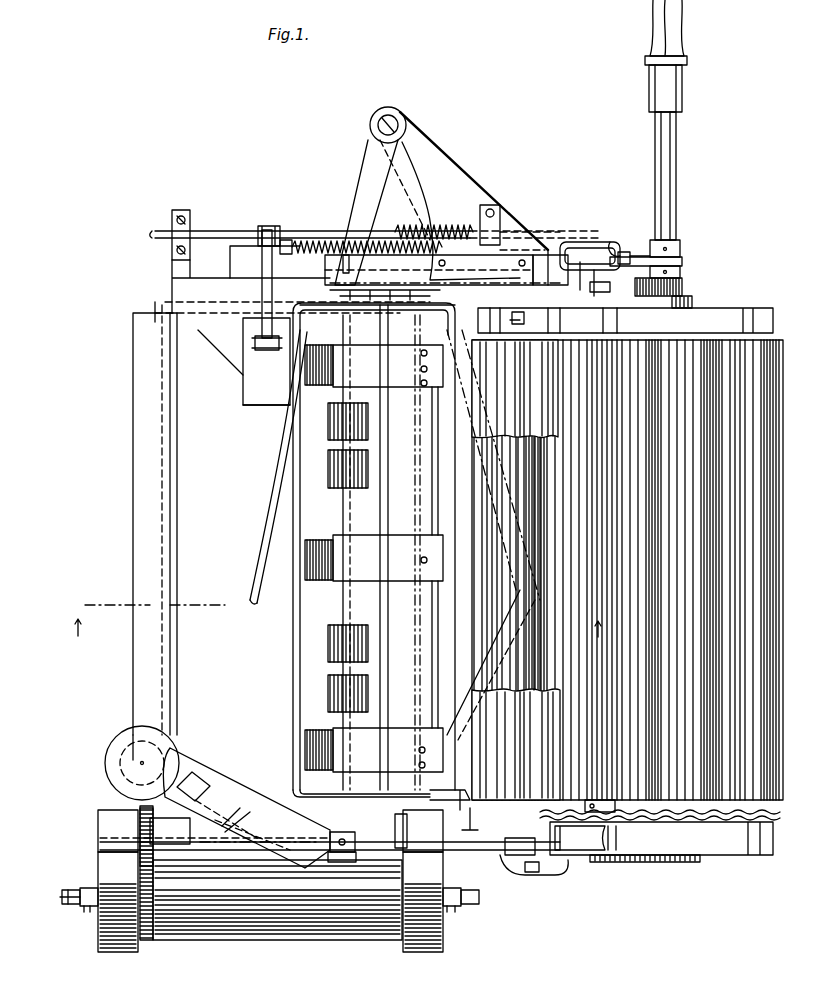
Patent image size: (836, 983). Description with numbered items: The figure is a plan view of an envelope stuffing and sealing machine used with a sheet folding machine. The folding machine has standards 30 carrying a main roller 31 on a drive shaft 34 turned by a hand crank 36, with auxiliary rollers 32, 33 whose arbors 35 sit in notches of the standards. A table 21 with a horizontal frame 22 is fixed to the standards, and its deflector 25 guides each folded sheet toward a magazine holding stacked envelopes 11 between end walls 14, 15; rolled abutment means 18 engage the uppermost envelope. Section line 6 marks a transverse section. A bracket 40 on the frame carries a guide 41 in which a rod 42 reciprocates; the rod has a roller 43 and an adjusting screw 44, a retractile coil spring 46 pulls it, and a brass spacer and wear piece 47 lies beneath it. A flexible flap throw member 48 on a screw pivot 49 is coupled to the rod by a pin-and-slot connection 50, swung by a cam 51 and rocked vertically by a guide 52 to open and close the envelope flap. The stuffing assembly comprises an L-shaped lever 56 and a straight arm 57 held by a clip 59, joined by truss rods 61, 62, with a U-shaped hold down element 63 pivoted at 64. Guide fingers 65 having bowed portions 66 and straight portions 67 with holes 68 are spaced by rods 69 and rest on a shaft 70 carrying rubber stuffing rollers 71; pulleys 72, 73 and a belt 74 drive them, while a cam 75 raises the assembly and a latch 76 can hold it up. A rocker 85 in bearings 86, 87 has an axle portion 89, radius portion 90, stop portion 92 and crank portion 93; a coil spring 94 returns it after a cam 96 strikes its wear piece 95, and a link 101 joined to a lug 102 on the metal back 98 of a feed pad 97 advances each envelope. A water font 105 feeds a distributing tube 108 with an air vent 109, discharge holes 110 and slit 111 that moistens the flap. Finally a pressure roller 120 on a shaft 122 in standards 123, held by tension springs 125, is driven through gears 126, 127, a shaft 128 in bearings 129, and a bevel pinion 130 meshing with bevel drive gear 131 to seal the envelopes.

The section line 6- 6 is at (331, 616).
The envelope 11 is at (170, 462).
The end wall 14 is at (235, 325).
The end wall 15 is at (354, 546).
The abutment means 18 is at (176, 548).
The table 21 is at (131, 388).
The horizontal frame 22 is at (140, 680).
The deflector 25 is at (516, 487).
The standards 30 is at (728, 322).
The main roller 31 is at (540, 650).
The auxiliary roller 32 is at (503, 614).
The auxiliary roller 33 is at (500, 430).
The drive shaft 34 is at (676, 166).
The arbors 35 is at (612, 838).
The hand crank 36 is at (676, 100).
The bracket 40 is at (430, 160).
The guide 41 is at (520, 250).
The rod 42 is at (555, 275).
The roller 43 is at (585, 262).
The adjusting screw 44 is at (300, 258).
The retractile coil spring 46 is at (315, 252).
The brass spacer and wear piece 47 is at (530, 230).
The flexible flap throw member 48 is at (280, 486).
The screw pivot 49 is at (370, 124).
The pin-and-slot connection 50 is at (348, 255).
The cam 51 is at (682, 286).
The cam or guide 52 is at (375, 295).
The L-shaped member 56 is at (550, 300).
The straight member 57 is at (462, 798).
The clip 59 is at (598, 800).
The truss rod 61 is at (470, 600).
The truss rod 62 is at (340, 575).
The bracer and envelope hold down element 63 is at (293, 636).
The pivotal connection 64 is at (462, 308).
The guide fingers 65 is at (405, 388).
The finger portion 66 is at (305, 565).
The finger portion 67 is at (405, 355).
The holes 68 is at (428, 368).
The spacer rods 69 is at (432, 462).
The shaft 70 is at (345, 515).
The stuffing rollers 71 is at (328, 466).
The grooved pulley 72 is at (660, 862).
The grooved pulley 73 is at (332, 832).
The belt 74 is at (470, 852).
The cam 75 is at (692, 302).
The latch 76 is at (508, 272).
The rocker 85 is at (148, 238).
The bearing 86 is at (496, 222).
The bearing 87 is at (172, 215).
The axle portion 89 is at (570, 242).
The radius portion 90 is at (610, 242).
The stop portion 92 is at (600, 262).
The crank portion 93 is at (222, 232).
The coil spring 94 is at (403, 230).
The wear piece 95 is at (630, 254).
The cam 96 is at (682, 262).
The feed pad 97 is at (259, 411).
The metal back 98 is at (243, 383).
The link 101 is at (262, 266).
The lug 102 is at (260, 350).
The water font 105 is at (118, 752).
The water distributing tube 108 is at (232, 790).
The air vent 109 is at (192, 770).
The discharge holes 110 is at (290, 842).
The longitudinal slit 111 is at (236, 830).
The pressure roller 120 is at (292, 936).
The shaft 122 is at (62, 896).
The standards 123 is at (105, 952).
The coiled tension springs 125 is at (86, 910).
The gear 126 is at (150, 932).
The gear 127 is at (138, 812).
The shaft 128 is at (200, 835).
The bearings 129 is at (100, 848).
The bevel pinion gear 130 is at (545, 862).
The bevel drive gear 131 is at (665, 822).